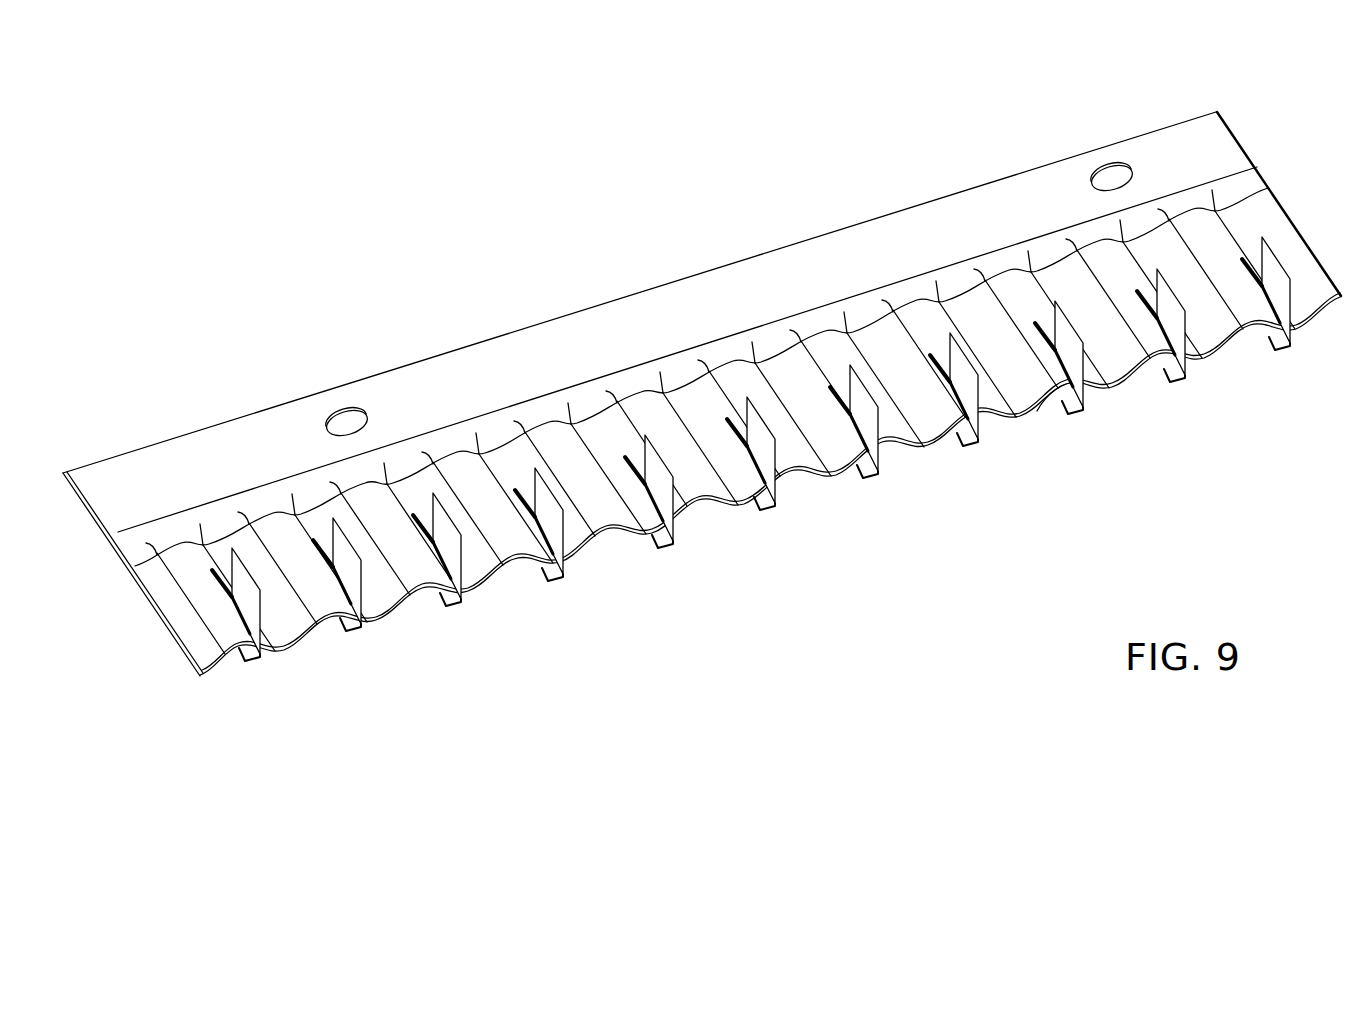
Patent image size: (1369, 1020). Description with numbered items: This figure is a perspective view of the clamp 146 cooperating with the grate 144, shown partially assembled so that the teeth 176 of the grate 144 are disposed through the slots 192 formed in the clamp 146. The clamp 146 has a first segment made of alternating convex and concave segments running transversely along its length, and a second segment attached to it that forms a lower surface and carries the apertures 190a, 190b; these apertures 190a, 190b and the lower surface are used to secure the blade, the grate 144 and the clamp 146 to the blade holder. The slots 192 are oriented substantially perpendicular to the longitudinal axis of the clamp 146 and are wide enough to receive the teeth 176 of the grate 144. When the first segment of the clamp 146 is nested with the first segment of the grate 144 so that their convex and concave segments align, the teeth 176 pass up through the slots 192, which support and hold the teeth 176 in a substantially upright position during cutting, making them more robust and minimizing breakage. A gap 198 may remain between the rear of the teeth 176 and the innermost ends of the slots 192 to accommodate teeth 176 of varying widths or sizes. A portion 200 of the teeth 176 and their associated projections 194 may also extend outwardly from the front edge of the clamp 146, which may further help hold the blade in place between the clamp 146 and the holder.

The grate 144 is at (164, 622).
The clamp 146 is at (168, 465).
The teeth 176 is at (737, 387).
The aperture 190a is at (347, 420).
The aperture 190b is at (1112, 185).
The slots 192 is at (525, 508).
The projections 194 is at (545, 557).
The gap 198 is at (1045, 310).
The portion of the teeth 200 is at (1066, 412).